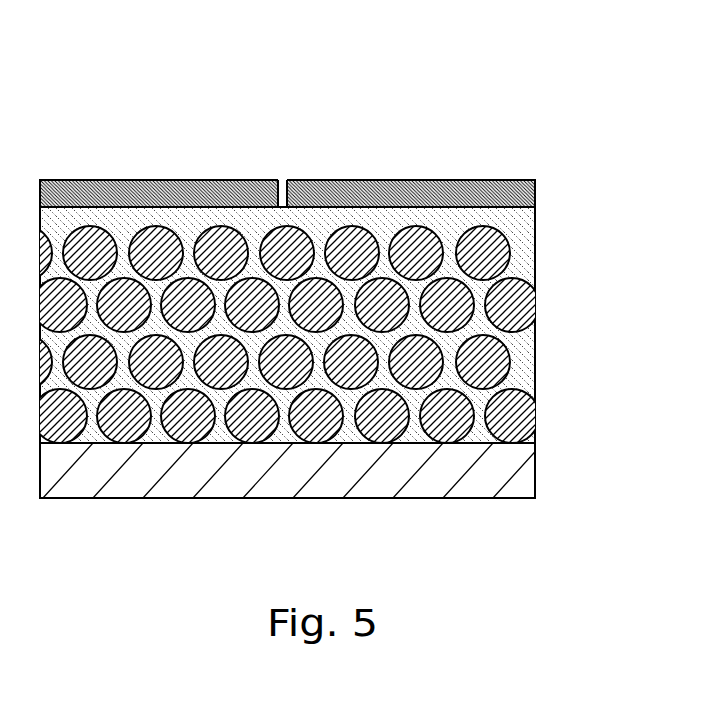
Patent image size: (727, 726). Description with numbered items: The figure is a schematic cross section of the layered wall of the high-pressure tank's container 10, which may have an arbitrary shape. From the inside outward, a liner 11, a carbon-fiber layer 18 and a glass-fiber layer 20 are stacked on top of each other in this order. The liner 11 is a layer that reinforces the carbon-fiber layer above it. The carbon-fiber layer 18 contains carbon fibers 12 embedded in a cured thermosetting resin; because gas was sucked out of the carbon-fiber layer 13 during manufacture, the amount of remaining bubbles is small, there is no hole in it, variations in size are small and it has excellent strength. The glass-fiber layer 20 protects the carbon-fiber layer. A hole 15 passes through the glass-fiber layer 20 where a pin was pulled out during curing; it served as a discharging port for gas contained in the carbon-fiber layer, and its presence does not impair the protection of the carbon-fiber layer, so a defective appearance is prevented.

The container 10 is at (134, 126).
The liner 11 is at (523, 477).
The carbon fibers 12 is at (503, 357).
The carbon-fiber layer 13 is at (523, 248).
The hole 15 is at (287, 176).
The carbon-fiber layer 18 is at (593, 220).
The glass-fiber layer 20 is at (535, 194).